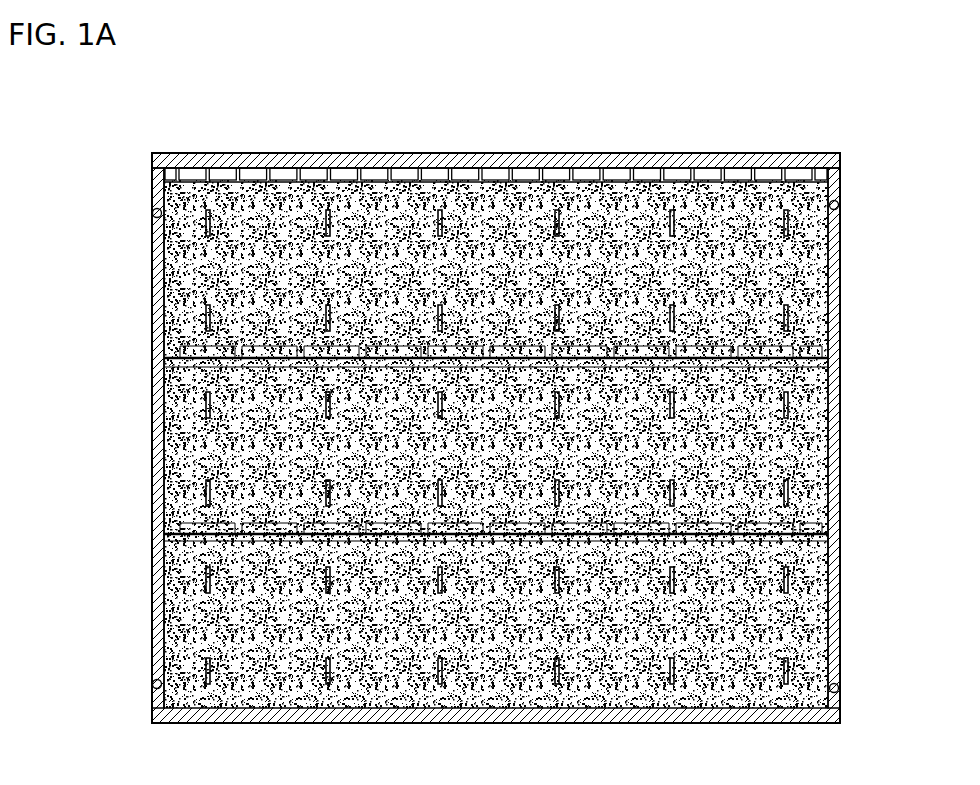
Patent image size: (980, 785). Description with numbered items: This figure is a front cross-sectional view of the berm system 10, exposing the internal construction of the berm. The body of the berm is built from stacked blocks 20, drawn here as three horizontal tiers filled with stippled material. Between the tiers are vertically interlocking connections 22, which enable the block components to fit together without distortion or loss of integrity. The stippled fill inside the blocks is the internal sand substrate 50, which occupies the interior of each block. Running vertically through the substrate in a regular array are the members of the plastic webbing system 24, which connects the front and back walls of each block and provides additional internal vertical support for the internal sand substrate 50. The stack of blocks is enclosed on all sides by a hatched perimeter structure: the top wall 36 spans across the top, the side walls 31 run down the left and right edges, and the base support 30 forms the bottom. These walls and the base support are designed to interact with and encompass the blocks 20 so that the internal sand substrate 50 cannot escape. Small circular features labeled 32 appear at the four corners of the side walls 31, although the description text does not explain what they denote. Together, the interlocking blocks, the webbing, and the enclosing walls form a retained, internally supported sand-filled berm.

The berm system 10 is at (294, 104).
The blocks 20 is at (175, 303).
The vertically interlocking connections 22 is at (175, 345).
The plastic webbing system 24 is at (790, 489).
The base support 30 is at (152, 712).
The side walls 31 is at (840, 268).
The aperture 32 is at (157, 213).
The top wall 36 is at (680, 153).
The internal sand substrate 50 is at (713, 633).